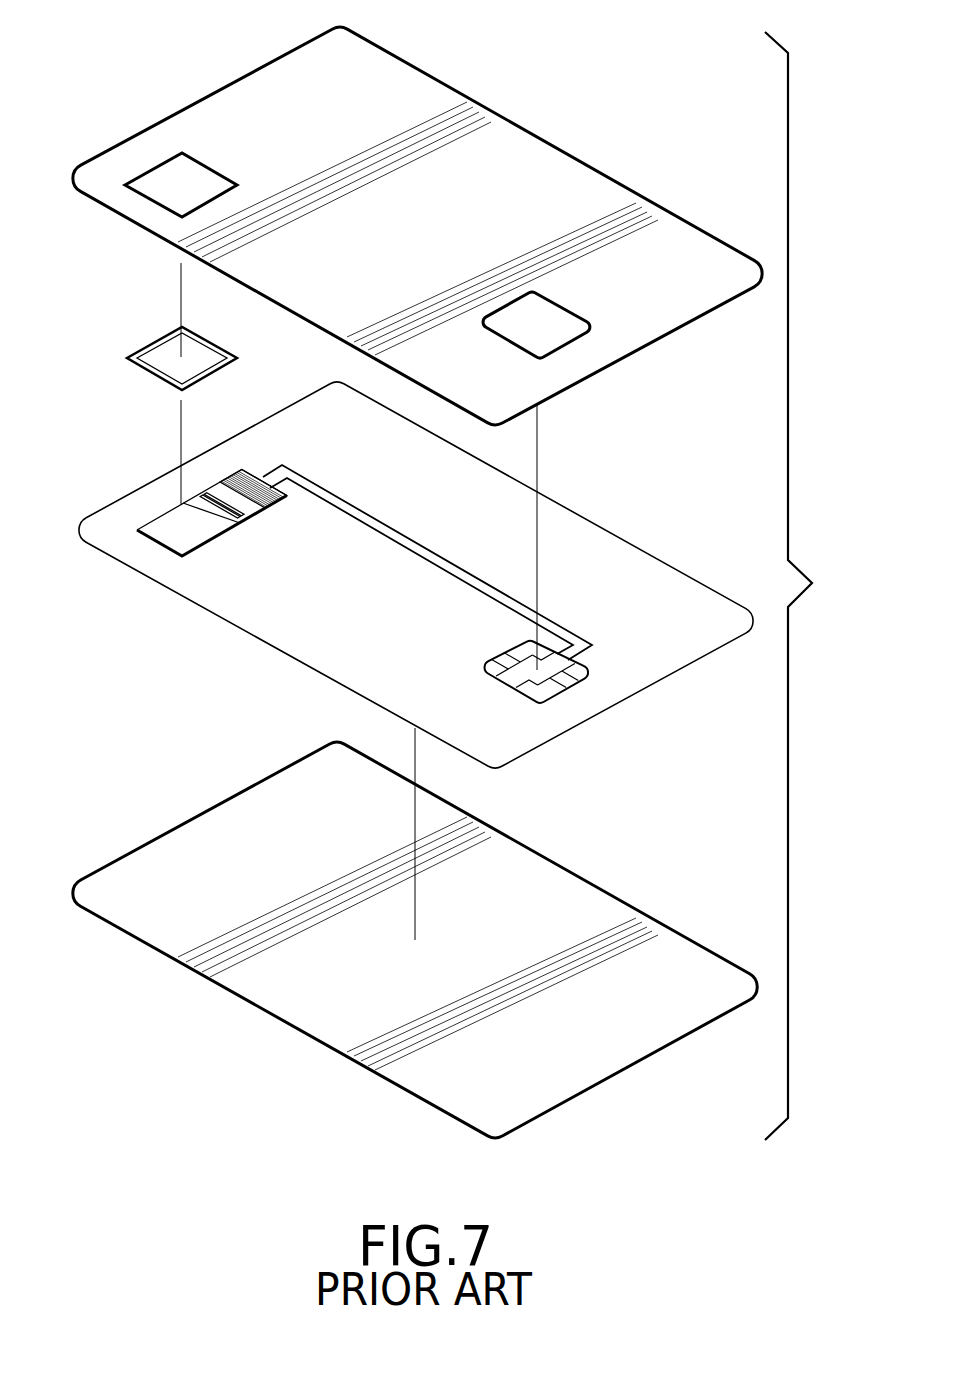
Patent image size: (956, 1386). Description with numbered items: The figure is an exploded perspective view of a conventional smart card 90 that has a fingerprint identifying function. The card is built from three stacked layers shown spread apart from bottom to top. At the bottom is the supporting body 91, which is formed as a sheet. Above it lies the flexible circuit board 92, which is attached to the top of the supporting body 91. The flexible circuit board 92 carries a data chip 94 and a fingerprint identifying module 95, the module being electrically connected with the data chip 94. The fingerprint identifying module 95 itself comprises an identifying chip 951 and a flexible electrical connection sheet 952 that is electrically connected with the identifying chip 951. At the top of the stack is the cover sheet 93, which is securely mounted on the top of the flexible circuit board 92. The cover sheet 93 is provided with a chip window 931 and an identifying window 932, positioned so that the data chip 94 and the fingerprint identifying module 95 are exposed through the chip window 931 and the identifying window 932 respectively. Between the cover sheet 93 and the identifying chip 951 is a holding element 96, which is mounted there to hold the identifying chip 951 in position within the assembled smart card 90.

The conventional smart card 90 is at (807, 586).
The supporting body 91 is at (562, 900).
The flexible circuit board 92 is at (636, 548).
The cover sheet 93 is at (516, 126).
The chip window 931 is at (572, 340).
The identifying window 932 is at (152, 178).
The data chip 94 is at (563, 692).
The fingerprint identifying module 95 is at (197, 533).
The identifying chip 951 is at (172, 540).
The flexible electrical connection sheet 952 is at (232, 517).
The holding element 96 is at (138, 366).